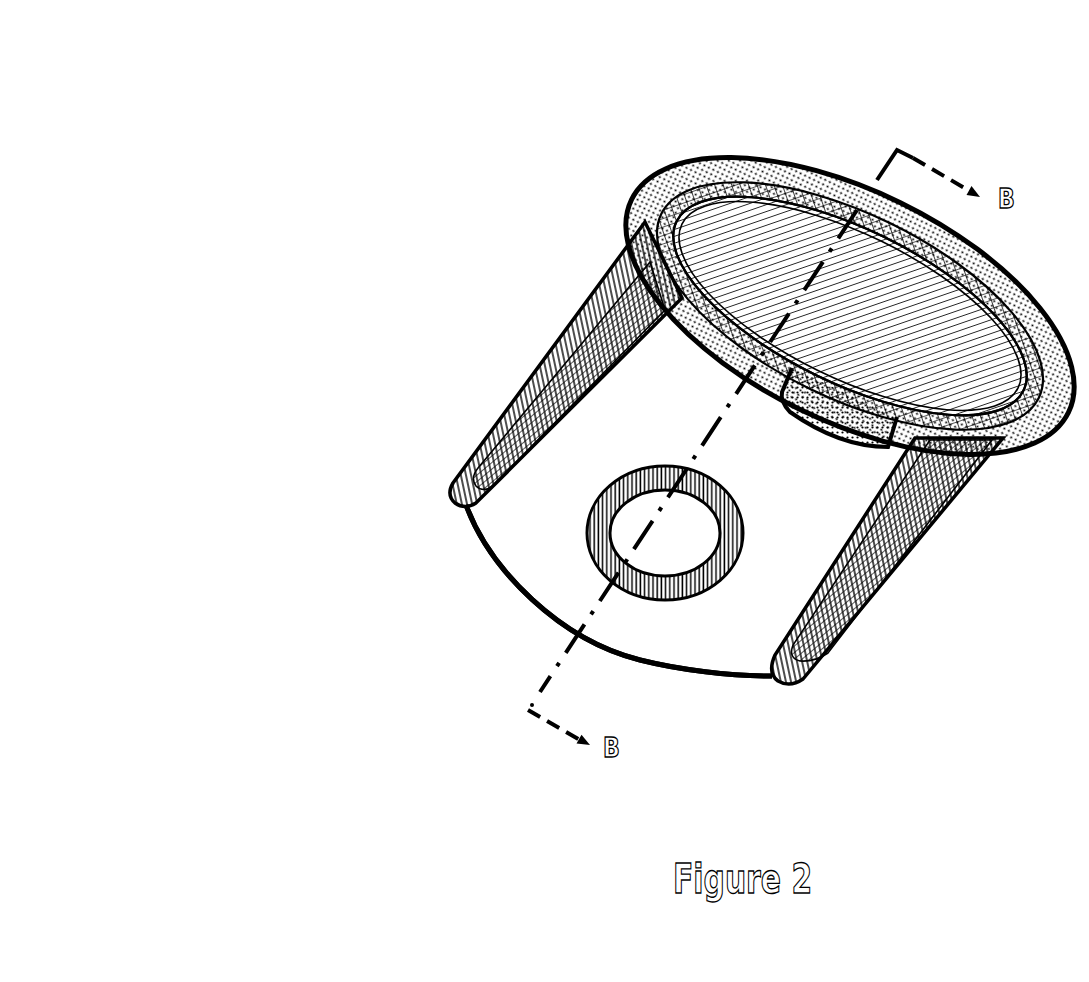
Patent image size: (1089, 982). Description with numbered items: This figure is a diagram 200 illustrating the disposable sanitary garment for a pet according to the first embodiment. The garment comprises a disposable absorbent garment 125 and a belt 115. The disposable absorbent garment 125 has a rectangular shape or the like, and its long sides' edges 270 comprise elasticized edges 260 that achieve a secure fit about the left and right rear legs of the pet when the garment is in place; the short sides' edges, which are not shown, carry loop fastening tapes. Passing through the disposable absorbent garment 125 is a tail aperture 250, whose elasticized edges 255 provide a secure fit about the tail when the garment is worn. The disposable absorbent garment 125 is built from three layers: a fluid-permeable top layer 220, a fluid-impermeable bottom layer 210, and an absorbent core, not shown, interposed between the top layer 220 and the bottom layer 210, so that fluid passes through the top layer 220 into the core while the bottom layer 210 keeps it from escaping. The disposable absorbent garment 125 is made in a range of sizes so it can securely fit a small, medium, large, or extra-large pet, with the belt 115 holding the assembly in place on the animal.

The diagram 200 is at (625, 417).
The belt 115 is at (683, 160).
The disposable absorbent garment 125 is at (528, 612).
The fluid-impermeable bottom layer 210 is at (682, 436).
The fluid-permeable top layer 220 is at (942, 364).
The tail aperture 250 is at (691, 561).
The elasticized edges 255 is at (742, 514).
The elasticized edges 260 is at (533, 342).
The long sides' edges 270 is at (452, 467).